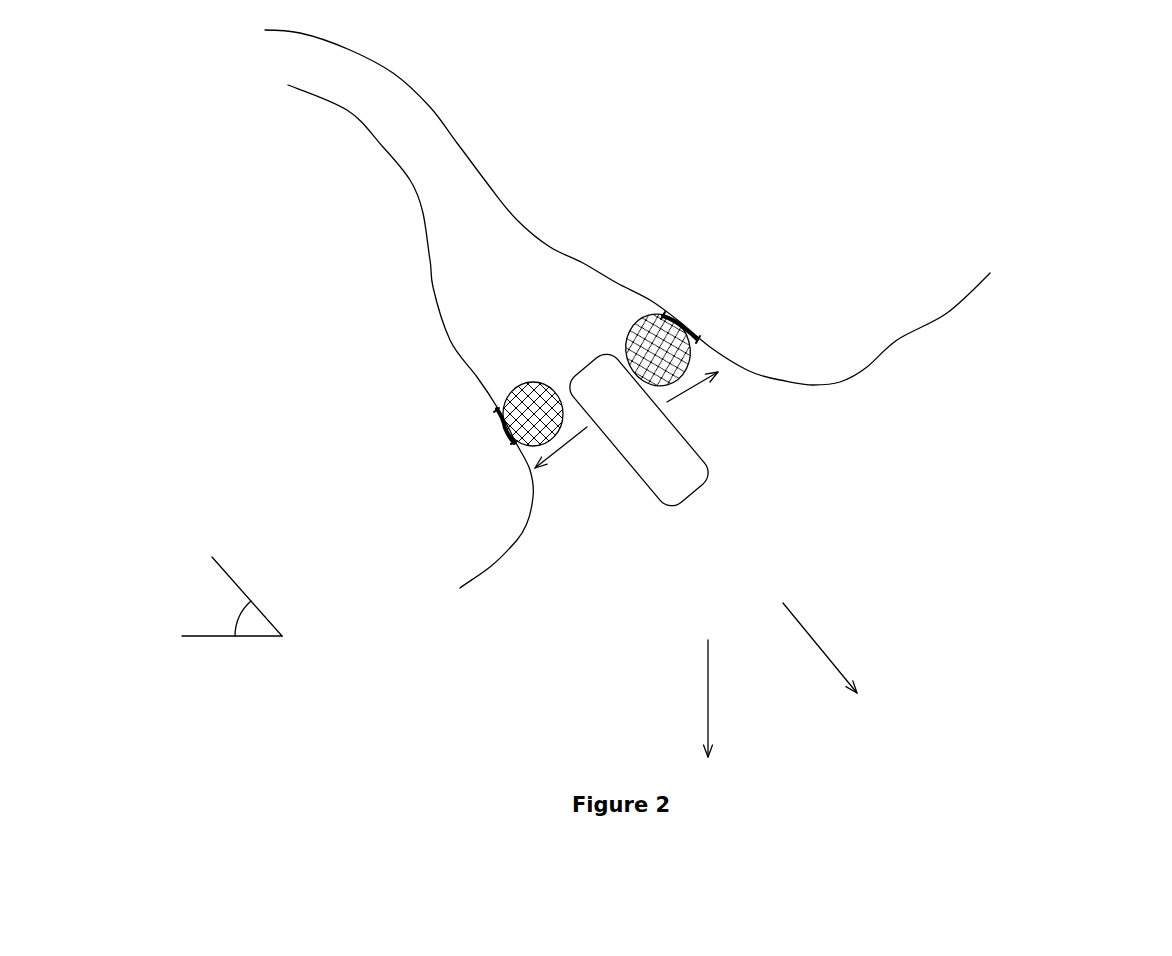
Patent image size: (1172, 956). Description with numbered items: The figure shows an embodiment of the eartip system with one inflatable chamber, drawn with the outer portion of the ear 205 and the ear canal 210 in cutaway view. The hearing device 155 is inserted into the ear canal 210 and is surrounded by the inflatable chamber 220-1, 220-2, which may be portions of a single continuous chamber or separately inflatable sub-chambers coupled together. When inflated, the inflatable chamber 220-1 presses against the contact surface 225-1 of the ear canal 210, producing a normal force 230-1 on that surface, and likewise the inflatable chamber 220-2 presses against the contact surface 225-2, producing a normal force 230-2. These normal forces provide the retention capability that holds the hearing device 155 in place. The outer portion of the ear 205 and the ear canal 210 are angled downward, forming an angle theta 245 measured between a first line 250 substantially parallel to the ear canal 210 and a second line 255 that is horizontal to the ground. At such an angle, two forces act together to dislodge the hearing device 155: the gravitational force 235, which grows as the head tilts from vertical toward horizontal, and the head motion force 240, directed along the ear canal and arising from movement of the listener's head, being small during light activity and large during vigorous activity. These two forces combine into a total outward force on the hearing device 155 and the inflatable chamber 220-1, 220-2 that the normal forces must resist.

The outer portion of an ear 205 is at (1007, 353).
The ear canal 210 is at (423, 182).
The hearing device 155 is at (674, 524).
The inflatable chamber 220-1 is at (503, 387).
The inflatable chamber 220-2 is at (633, 308).
The contact surface 225-1 is at (466, 441).
The contact surface 225-2 is at (752, 303).
The normal force 230-1 is at (588, 438).
The normal force 230-2 is at (700, 393).
The gravitational force 235 is at (708, 693).
The head motion force 240 is at (807, 627).
The angle θ 245 is at (220, 613).
The first line 250 is at (222, 568).
The second line 255 is at (217, 640).